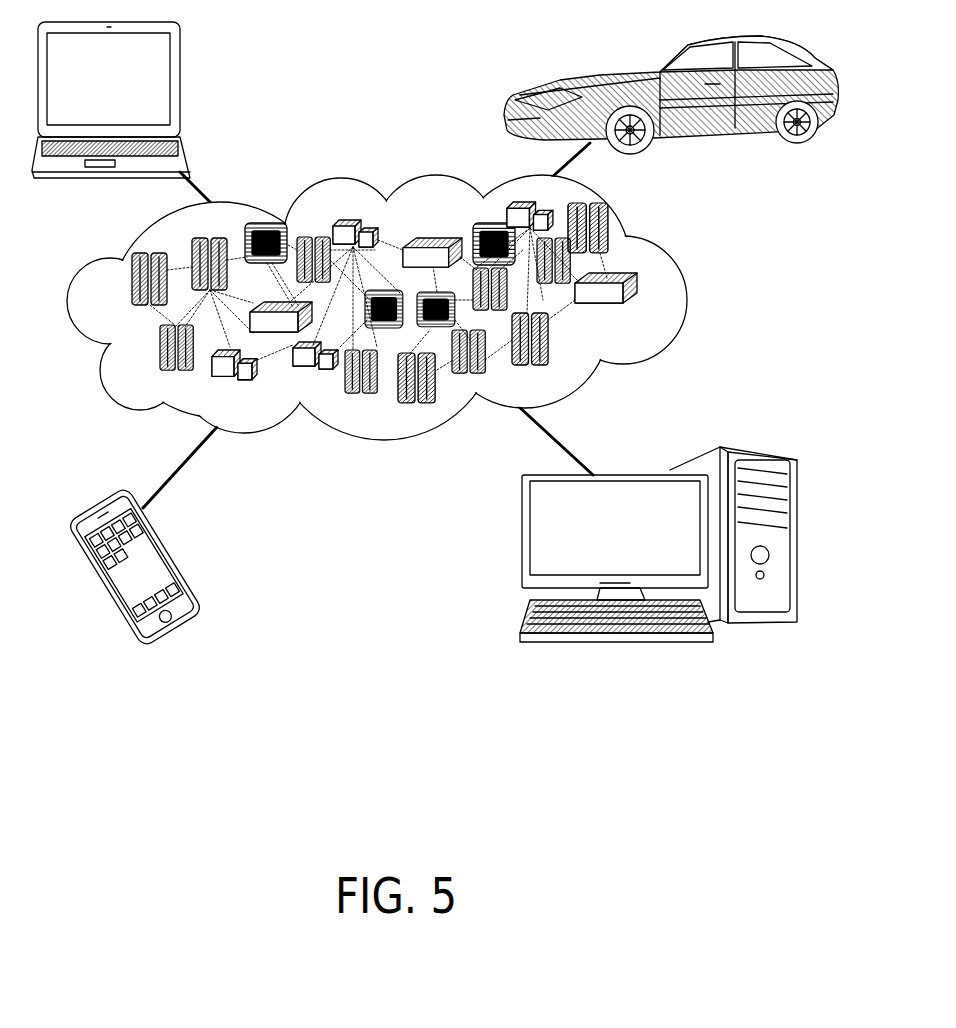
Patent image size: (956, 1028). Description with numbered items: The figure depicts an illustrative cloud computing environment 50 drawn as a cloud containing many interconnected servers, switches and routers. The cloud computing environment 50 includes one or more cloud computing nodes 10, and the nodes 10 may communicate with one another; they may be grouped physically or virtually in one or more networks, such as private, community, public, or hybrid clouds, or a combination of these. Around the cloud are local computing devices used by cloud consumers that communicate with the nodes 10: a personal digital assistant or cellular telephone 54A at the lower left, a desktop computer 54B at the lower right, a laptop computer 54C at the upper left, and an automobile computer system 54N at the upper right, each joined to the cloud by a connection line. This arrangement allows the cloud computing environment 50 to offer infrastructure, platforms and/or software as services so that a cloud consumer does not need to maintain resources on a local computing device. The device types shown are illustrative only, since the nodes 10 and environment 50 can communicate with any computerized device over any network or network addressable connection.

The laptop computer 54C is at (163, 97).
The automobile computer system 54N is at (510, 101).
The cloud computing environment 50 is at (403, 307).
The cloud computing node 10 is at (640, 304).
The personal digital assistant or cellular telephone 54A is at (160, 557).
The desktop computer 54B is at (697, 450).